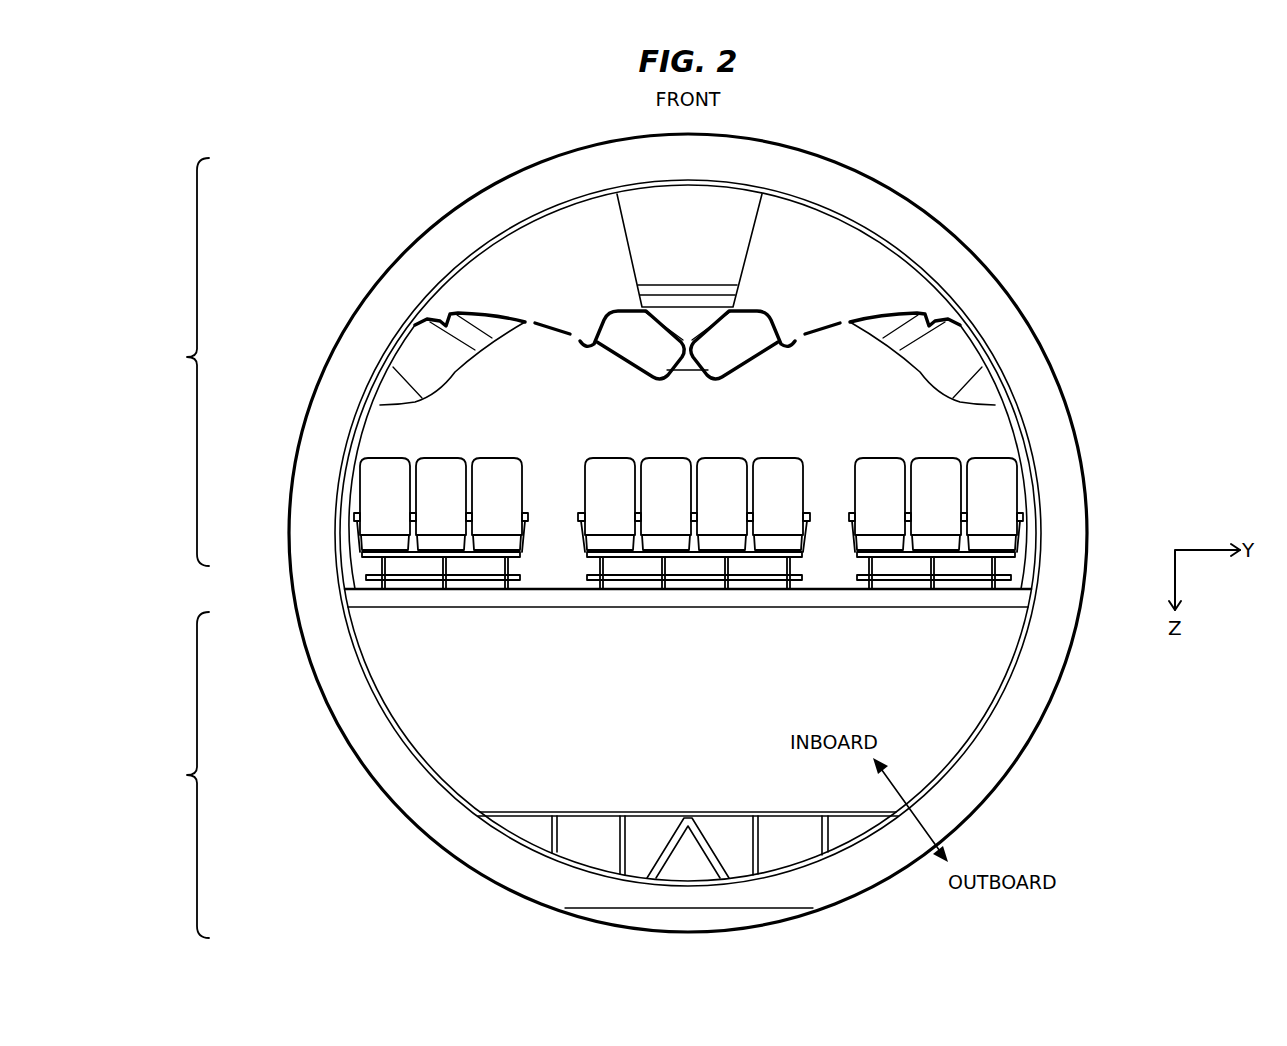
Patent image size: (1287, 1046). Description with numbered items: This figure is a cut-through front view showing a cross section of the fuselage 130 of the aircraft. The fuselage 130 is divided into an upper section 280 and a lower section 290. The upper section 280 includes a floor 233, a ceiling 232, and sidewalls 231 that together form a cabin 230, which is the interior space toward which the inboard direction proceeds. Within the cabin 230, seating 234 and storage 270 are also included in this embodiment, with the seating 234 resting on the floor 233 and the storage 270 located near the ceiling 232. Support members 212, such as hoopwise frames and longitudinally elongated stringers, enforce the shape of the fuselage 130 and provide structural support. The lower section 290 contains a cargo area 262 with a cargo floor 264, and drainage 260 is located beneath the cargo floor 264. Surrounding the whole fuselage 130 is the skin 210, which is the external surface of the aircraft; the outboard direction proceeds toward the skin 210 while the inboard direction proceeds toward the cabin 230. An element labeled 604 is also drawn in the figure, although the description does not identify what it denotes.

The fuselage 130 is at (1092, 845).
The skin 210 is at (998, 281).
The support members 212 is at (1018, 354).
The cabin 230 is at (546, 508).
The sidewalls 231 is at (368, 422).
The ceiling 232 is at (822, 321).
The floor 233 is at (556, 591).
The seating 234 is at (722, 457).
The drainage 260 is at (664, 923).
The cargo area 262 is at (990, 659).
The cargo floor 264 is at (602, 809).
The storage 270 is at (436, 344).
The upper section 280 is at (177, 362).
The lower section 290 is at (177, 775).
The floor beam 604 is at (862, 609).